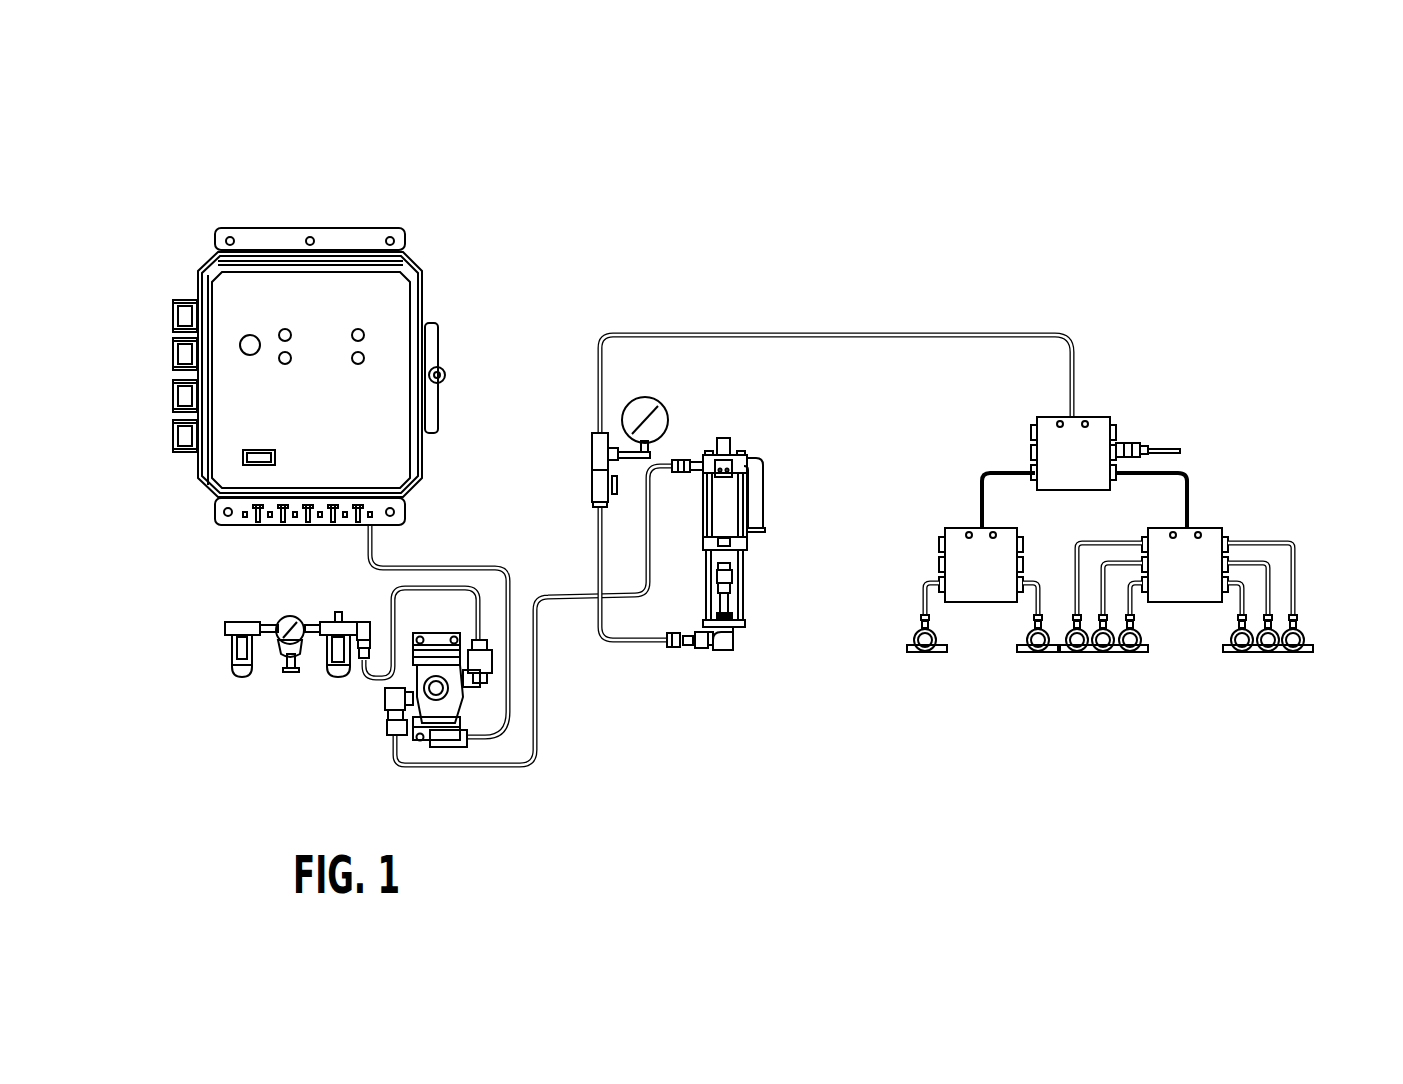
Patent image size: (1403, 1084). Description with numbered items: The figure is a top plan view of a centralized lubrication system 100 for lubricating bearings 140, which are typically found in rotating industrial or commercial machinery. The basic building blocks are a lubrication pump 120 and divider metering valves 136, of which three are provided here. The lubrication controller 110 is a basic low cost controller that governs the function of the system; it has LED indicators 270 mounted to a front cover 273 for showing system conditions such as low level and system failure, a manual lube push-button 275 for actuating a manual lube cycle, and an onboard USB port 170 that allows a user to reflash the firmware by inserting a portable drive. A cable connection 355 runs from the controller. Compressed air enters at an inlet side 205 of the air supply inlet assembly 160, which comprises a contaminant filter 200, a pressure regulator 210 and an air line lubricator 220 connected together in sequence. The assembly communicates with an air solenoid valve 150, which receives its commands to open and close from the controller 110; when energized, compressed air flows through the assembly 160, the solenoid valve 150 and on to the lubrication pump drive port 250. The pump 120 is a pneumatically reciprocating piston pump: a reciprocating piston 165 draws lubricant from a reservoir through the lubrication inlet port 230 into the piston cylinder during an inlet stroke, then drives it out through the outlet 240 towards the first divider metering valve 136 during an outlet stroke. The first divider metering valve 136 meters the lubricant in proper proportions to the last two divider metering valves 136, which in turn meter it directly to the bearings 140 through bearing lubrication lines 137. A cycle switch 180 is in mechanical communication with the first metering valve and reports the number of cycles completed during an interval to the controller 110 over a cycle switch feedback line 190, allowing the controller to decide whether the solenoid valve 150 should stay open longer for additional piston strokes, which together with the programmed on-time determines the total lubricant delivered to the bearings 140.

The lubrication system 100 is at (1018, 267).
The lubrication controller 110 is at (328, 341).
The lubrication pump 120 is at (769, 525).
The divider metering valve 136 is at (1100, 425).
The bearing lubrication line 137 is at (922, 600).
The bearing 140 is at (912, 652).
The air solenoid valve 150 is at (463, 697).
The air supply inlet assembly 160 is at (257, 702).
The reciprocating piston 165 is at (732, 575).
The onboard USB port 170 is at (215, 497).
The cycle switch 180 is at (1128, 445).
The cycle switch feedback line 190 is at (1180, 450).
The contaminant filter 200 is at (242, 680).
The inlet side 205 is at (225, 628).
The pressure regulator 210 is at (284, 668).
The air line lubricator 220 is at (338, 678).
The lubrication inlet port 230 is at (723, 653).
The outlet 240 is at (668, 645).
The lubrication pump drive port 250 is at (683, 460).
The LED indicator 270 is at (358, 329).
The front cover 273 is at (422, 307).
The manual lube push-button 275 is at (250, 335).
The cable connection 355 is at (365, 525).